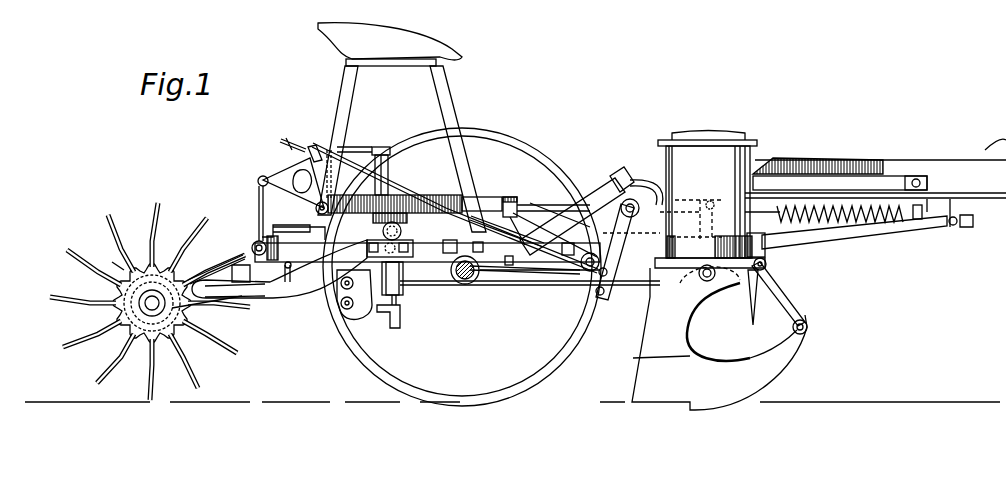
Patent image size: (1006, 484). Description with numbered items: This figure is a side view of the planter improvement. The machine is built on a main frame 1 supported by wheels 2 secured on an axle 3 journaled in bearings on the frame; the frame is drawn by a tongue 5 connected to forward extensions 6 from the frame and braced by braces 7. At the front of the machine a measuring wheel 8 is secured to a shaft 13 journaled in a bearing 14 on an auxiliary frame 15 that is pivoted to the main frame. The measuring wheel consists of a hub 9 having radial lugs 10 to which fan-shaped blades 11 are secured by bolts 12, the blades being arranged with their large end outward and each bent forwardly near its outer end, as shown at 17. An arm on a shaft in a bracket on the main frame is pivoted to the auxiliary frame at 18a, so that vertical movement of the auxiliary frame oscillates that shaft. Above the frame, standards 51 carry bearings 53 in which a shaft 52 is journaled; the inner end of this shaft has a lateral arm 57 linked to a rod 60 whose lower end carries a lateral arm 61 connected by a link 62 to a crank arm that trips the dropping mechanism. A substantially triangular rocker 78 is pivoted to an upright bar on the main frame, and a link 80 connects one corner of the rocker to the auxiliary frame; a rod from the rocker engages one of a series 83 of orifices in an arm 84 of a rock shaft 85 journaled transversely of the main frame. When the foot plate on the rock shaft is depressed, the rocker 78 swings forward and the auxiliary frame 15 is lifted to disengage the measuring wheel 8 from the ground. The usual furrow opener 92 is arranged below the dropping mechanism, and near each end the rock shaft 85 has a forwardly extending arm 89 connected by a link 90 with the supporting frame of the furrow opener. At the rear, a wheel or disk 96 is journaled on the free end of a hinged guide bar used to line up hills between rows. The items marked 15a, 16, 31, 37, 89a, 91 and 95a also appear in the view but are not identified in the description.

The main frame 1 is at (310, 252).
The wheels 2 is at (470, 404).
The axle 3 is at (465, 284).
The tongue 5 is at (974, 170).
The forward extensions 6 is at (590, 196).
The braces 7 is at (880, 180).
The measuring wheel 8 is at (122, 332).
The hub 9 is at (150, 318).
The radial lugs 10 is at (110, 288).
The blades 11 is at (96, 258).
The bolts 12 is at (125, 372).
The shaft 13 is at (142, 306).
The bearing 14 is at (118, 264).
The auxiliary frame 15 is at (279, 280).
The gear 15a is at (402, 240).
The link 16 is at (235, 265).
The forwardly bent portion 17 is at (112, 226).
The pivot 18a is at (205, 313).
The bracket 31 is at (315, 146).
The bolt 37 is at (292, 140).
The standard 51 is at (445, 128).
The shaft 52 is at (358, 147).
The bearings 53 is at (385, 147).
The lateral arm 57 is at (392, 168).
The rod 60 is at (396, 293).
The lateral arm 61 is at (393, 322).
The link 62 is at (401, 318).
The rocker 78 is at (285, 172).
The link 80 is at (258, 188).
The series of orifices 83 is at (582, 296).
The arm 84 is at (616, 296).
The rock shaft 85 is at (627, 186).
The forwardly extending arm 89 is at (670, 142).
The rod 89a is at (530, 206).
The link 90 is at (684, 231).
The hopper 91 is at (708, 202).
The furrow opener 92 is at (719, 339).
The bracket 95a is at (548, 198).
The wheel or disk 96 is at (775, 300).